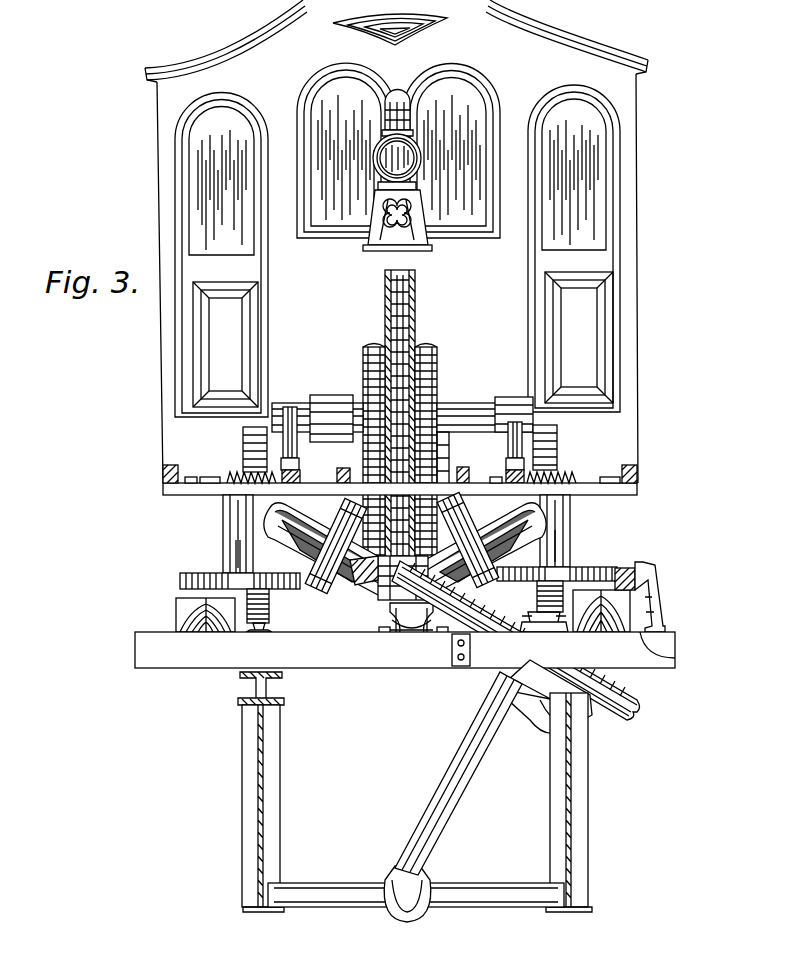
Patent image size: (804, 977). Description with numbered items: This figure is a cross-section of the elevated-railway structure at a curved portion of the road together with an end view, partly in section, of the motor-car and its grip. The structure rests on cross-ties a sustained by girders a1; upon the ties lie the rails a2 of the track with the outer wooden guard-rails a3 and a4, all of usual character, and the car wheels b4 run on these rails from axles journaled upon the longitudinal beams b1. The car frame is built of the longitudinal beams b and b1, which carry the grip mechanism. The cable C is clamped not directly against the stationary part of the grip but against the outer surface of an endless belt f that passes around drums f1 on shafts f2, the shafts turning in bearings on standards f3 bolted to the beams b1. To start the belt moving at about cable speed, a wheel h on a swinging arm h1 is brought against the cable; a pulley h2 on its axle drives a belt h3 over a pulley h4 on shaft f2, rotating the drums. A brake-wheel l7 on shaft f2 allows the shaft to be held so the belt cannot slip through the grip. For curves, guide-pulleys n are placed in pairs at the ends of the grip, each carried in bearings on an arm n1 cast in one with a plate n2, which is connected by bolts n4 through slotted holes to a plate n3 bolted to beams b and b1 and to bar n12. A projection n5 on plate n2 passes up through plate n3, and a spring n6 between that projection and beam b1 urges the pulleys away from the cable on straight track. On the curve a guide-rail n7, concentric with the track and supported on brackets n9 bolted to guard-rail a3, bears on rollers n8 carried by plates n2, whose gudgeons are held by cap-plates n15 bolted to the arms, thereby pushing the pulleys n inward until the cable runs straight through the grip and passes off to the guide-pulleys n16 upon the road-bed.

The endless belt f is at (410, 272).
The drums f1 is at (412, 305).
The shafts f2 is at (468, 412).
The standards f3 is at (290, 425).
The belt h3 is at (373, 347).
The pulley h4 is at (366, 366).
The brake-wheel l7 is at (434, 451).
The arm h1 is at (447, 458).
The bar n12 is at (345, 468).
The longitudinal beams b is at (163, 480).
The longitudinal beams b1 is at (300, 480).
The bolts n4 is at (188, 477).
The plate n3 is at (205, 478).
The projection n5 is at (222, 478).
The spring n6 is at (240, 520).
The plate n2 is at (240, 535).
The cap-plate n15 is at (230, 545).
The rollers n8 is at (212, 560).
The wheels b4 is at (269, 603).
The outer wooden guard-rail a4 is at (187, 615).
The rails a2 is at (270, 632).
The outer wooden guard-rail a3 is at (630, 605).
The guide-rail n7 is at (612, 575).
The brackets n9 is at (652, 578).
The arm n1 is at (405, 548).
The guide-pulleys n is at (300, 540).
The wheel h is at (384, 585).
The pulley h2 is at (360, 570).
The cable C is at (390, 605).
The guide-pulleys upon the road-bed n16 is at (626, 712).
The cross-ties a is at (405, 650).
The girders a1 is at (417, 807).